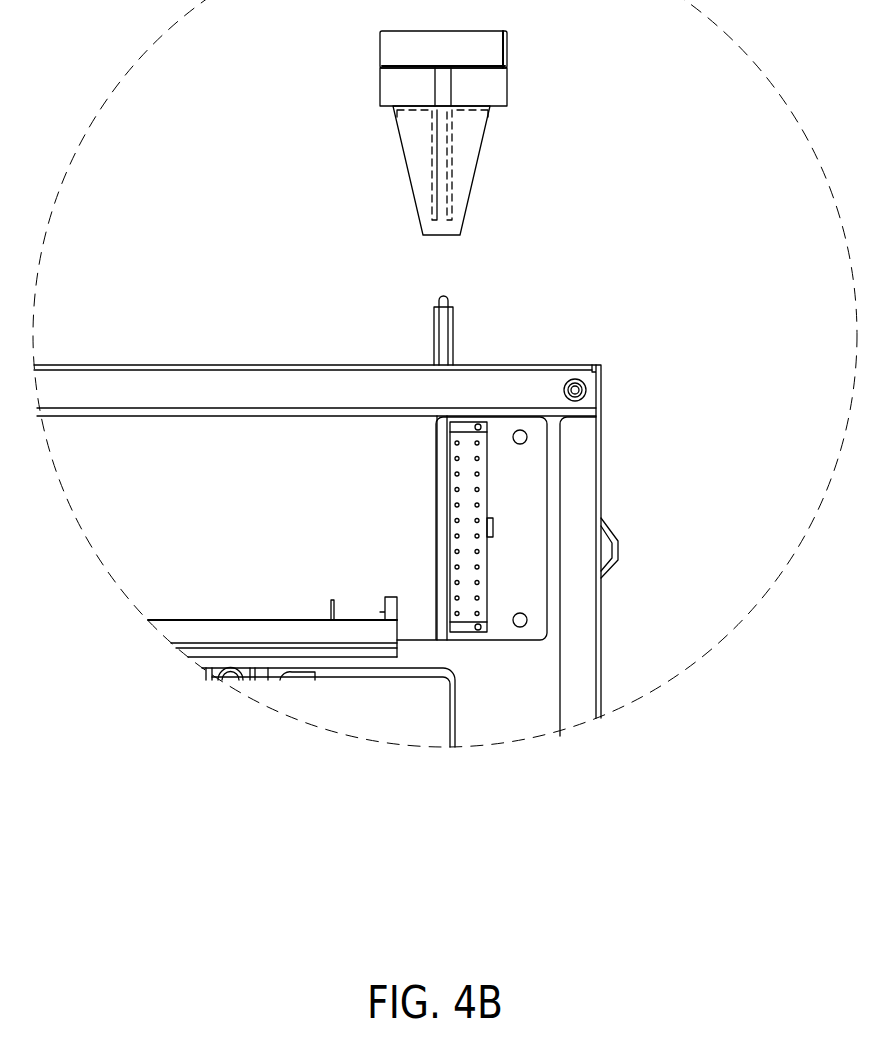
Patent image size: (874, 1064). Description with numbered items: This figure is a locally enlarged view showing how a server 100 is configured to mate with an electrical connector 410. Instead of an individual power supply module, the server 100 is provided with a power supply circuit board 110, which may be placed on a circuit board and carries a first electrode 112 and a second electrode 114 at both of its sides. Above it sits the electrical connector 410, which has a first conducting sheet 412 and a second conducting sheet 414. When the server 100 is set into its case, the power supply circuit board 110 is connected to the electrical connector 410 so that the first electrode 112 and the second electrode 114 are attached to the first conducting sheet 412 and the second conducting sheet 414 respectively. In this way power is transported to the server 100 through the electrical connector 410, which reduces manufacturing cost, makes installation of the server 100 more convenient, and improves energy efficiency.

The server 100 is at (173, 300).
The power supply circuit board 110 is at (408, 300).
The first electrode 112 is at (433, 337).
The second electrode 114 is at (454, 334).
The electrical connector 410 is at (600, 75).
The first conducting sheet 412 is at (433, 162).
The second conducting sheet 414 is at (452, 172).